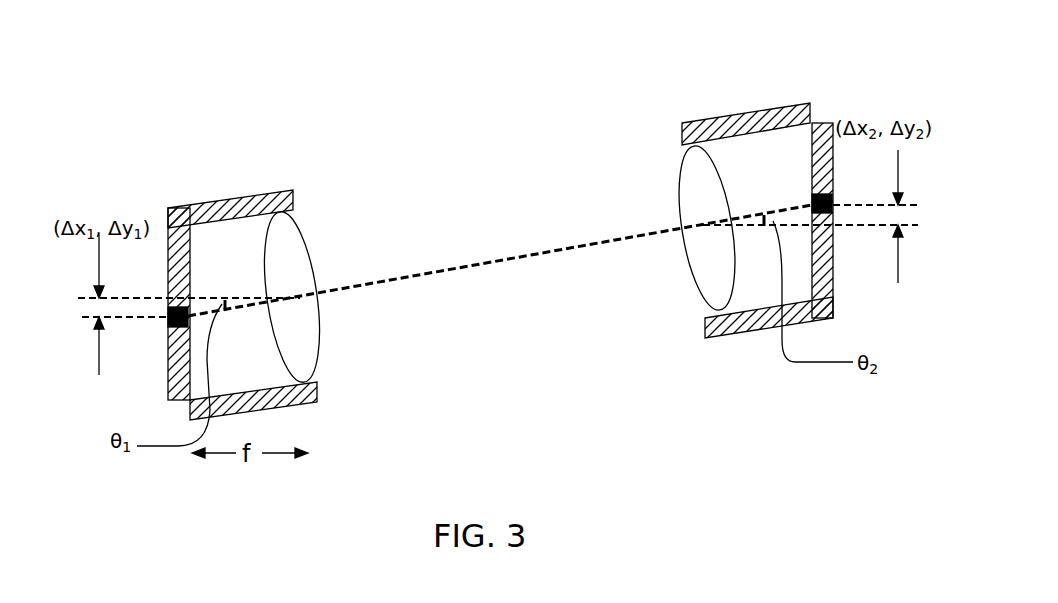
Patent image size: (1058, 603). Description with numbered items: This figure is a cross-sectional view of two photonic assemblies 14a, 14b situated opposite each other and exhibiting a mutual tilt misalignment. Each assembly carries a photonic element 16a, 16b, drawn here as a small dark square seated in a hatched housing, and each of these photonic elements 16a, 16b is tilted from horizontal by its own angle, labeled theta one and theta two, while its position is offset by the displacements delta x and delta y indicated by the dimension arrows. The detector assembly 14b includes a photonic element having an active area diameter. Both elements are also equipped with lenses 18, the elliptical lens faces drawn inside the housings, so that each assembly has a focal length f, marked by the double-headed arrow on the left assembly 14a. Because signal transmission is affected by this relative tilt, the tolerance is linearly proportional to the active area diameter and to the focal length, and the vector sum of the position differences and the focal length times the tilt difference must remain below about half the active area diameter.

The photonic assembly 14a is at (232, 173).
The detector assembly 14b is at (680, 103).
The photonic element 16a is at (169, 325).
The photonic element 16b is at (812, 200).
The lens 18 is at (682, 192).